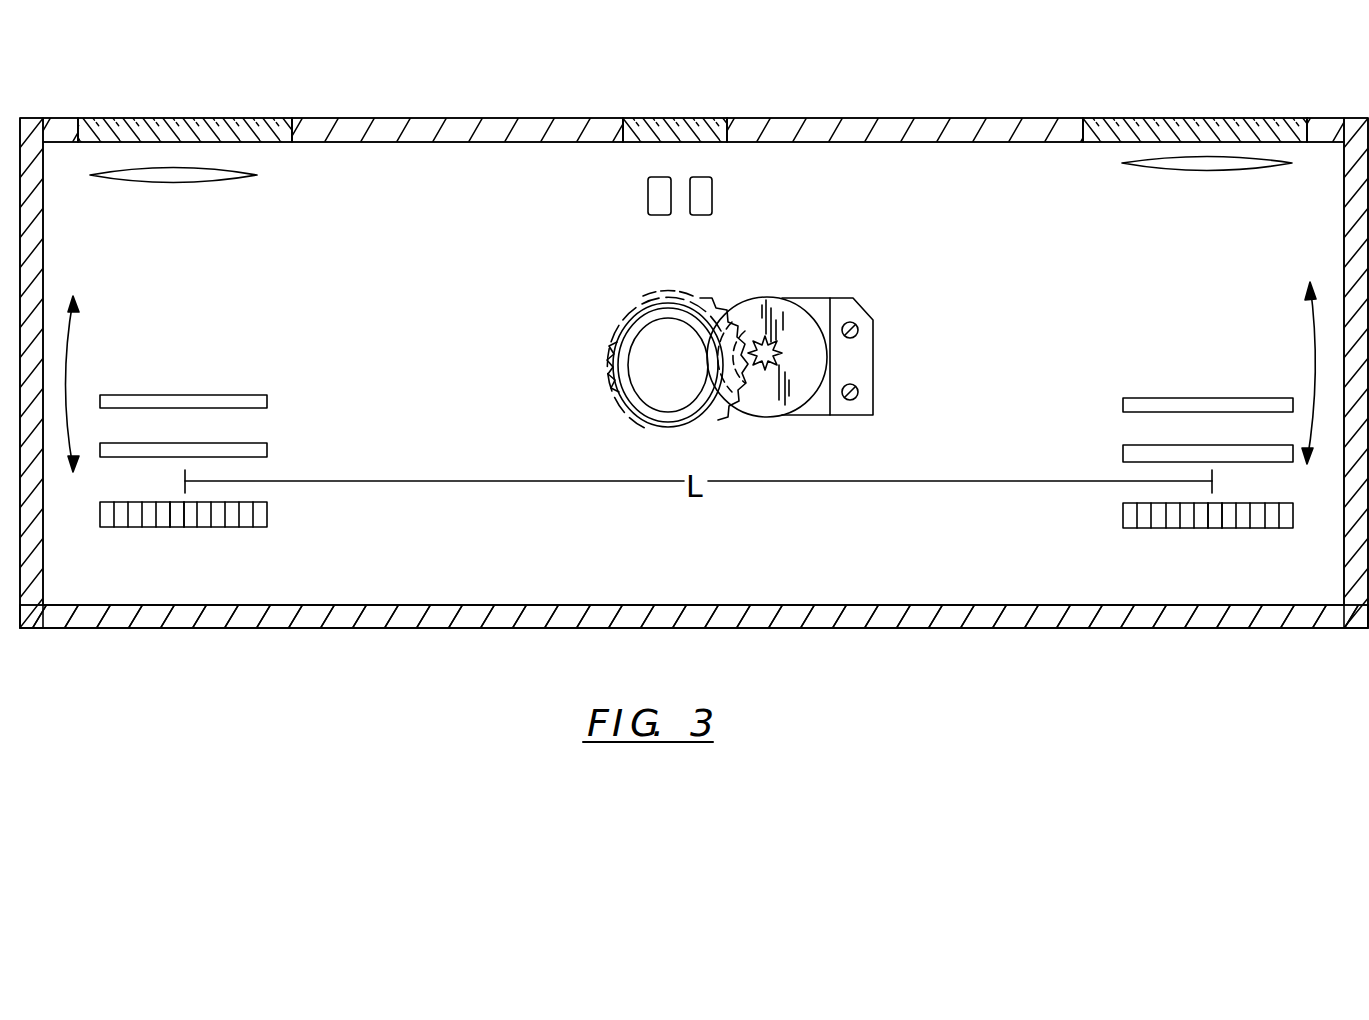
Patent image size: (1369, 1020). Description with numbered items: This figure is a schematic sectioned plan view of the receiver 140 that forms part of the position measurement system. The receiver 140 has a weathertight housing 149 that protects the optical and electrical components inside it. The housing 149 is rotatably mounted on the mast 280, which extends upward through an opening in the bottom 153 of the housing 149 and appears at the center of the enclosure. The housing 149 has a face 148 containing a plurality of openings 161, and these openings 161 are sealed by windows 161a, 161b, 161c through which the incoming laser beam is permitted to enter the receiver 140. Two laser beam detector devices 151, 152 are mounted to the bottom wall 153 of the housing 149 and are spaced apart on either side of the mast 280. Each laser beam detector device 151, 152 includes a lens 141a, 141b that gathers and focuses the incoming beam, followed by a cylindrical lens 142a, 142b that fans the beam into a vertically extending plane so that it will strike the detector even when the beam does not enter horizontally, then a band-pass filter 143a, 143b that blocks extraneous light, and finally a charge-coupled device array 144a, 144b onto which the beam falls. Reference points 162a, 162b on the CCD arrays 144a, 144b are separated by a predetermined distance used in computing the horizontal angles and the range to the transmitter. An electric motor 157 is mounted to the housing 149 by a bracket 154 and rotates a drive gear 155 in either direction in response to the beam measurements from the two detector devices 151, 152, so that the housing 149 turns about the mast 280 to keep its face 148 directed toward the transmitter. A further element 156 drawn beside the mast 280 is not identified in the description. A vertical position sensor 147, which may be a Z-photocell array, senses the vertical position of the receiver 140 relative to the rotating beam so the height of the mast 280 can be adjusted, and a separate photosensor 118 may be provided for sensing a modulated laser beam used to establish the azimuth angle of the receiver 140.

The photosensor 118 is at (648, 194).
The receiver 140 is at (694, 401).
The lens 141a is at (250, 178).
The lens 141b is at (1155, 200).
The cylindrical lens 142a is at (267, 400).
The cylindrical lens 142b is at (1133, 398).
The filter 143a is at (267, 448).
The filter 143b is at (1128, 445).
The CCD array 144a is at (260, 527).
The CCD array 144b is at (1123, 507).
The vertical position sensor 147 is at (712, 192).
The face 148 is at (380, 118).
The housing 149 is at (540, 629).
The laser beam detector device 151 is at (363, 331).
The laser beam detector device 152 is at (1085, 320).
The bottom wall 153 is at (1003, 178).
The bracket 154 is at (833, 303).
The drive gear 155 is at (760, 262).
The ring 156 is at (603, 362).
The electric motor 157 is at (801, 307).
The openings 161 is at (294, 122).
The window 161a is at (206, 86).
The window 161b is at (1206, 86).
The window 161c is at (676, 86).
The reference point 162a is at (185, 528).
The reference point 162b is at (1212, 529).
The mast 280 is at (631, 366).